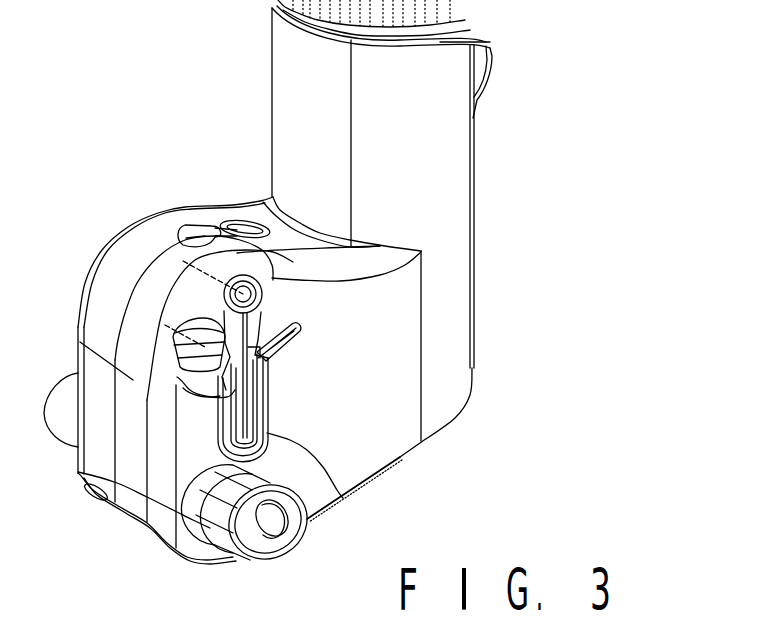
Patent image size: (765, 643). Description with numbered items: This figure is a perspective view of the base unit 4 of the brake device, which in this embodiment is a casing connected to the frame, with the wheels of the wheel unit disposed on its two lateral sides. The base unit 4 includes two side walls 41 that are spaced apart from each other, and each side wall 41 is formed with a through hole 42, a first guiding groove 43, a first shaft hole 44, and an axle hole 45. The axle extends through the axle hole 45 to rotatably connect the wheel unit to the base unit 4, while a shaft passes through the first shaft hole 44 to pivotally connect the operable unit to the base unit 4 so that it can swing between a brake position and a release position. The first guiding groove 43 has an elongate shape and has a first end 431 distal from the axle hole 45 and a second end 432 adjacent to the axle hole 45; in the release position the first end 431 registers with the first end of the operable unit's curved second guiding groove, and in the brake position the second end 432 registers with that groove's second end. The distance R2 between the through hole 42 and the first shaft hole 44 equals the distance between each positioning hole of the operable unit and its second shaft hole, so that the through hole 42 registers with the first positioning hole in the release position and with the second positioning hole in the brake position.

The base unit 4 is at (513, 187).
The side wall 41 is at (355, 347).
The through hole 42 is at (187, 345).
The first guiding groove 43 is at (215, 433).
The first end 431 is at (260, 347).
The second end 432 is at (354, 498).
The first shaft hole 44 is at (253, 290).
The axle hole 45 is at (268, 533).
The distance R2 is at (210, 268).